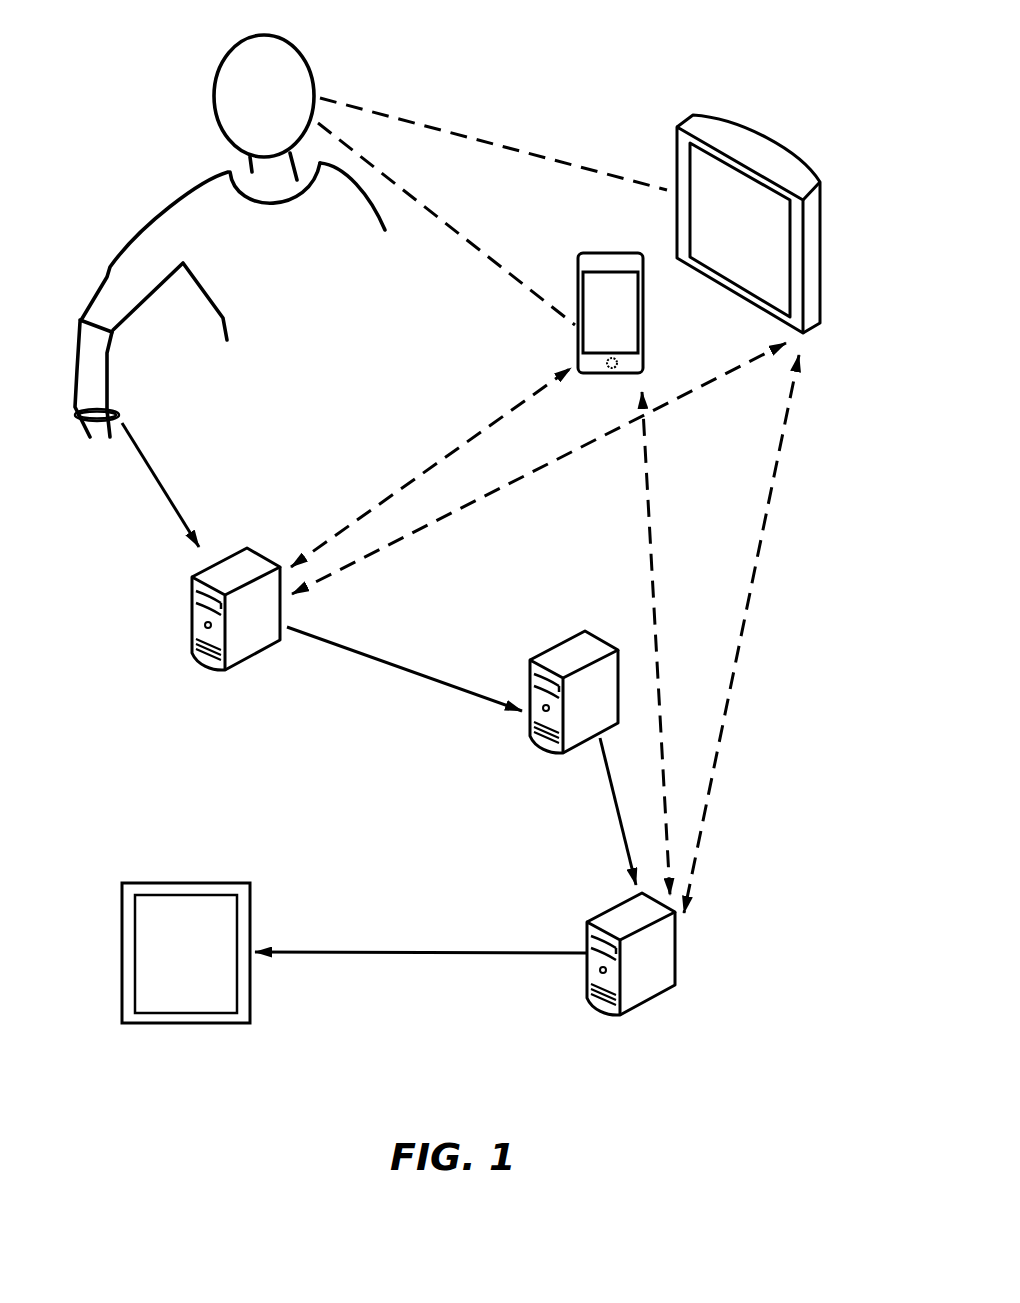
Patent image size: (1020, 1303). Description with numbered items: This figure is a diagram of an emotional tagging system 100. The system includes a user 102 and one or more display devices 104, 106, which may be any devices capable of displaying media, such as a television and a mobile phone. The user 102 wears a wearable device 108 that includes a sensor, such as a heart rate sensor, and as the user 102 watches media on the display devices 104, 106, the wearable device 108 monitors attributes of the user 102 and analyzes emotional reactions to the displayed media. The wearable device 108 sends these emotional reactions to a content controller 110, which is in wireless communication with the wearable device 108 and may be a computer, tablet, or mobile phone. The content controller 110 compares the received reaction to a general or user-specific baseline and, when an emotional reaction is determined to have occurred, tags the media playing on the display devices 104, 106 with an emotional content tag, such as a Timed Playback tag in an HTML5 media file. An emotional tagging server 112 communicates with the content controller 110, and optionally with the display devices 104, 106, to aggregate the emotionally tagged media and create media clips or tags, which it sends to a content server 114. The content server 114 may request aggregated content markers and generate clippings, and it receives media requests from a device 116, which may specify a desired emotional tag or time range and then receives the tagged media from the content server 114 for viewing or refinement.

The emotional tagging system 100 is at (692, 51).
The user 102 is at (200, 183).
The display device 104 is at (683, 120).
The display device 106 is at (637, 250).
The wearable device 108 is at (115, 400).
The content controller 110 is at (247, 547).
The emotional tagging server 112 is at (530, 670).
The content server 114 is at (602, 913).
The device 116 is at (232, 883).